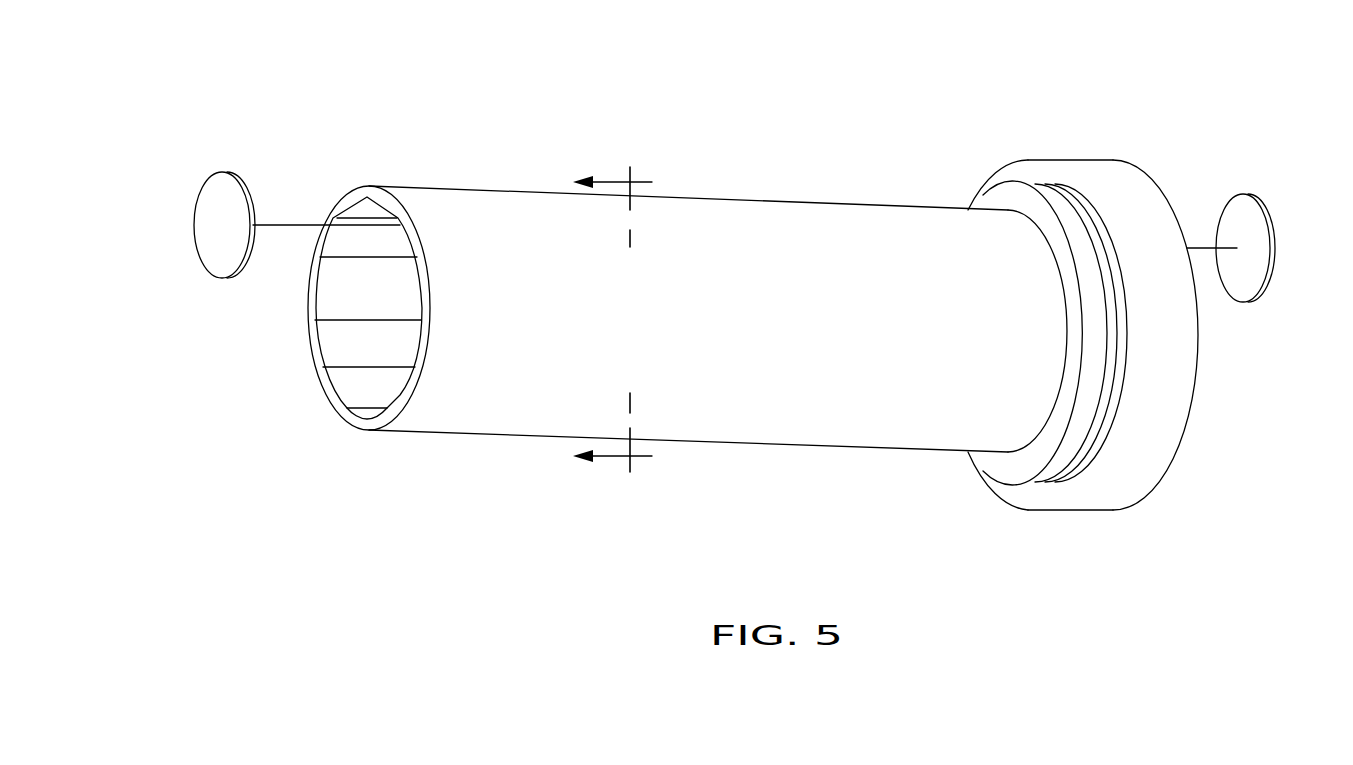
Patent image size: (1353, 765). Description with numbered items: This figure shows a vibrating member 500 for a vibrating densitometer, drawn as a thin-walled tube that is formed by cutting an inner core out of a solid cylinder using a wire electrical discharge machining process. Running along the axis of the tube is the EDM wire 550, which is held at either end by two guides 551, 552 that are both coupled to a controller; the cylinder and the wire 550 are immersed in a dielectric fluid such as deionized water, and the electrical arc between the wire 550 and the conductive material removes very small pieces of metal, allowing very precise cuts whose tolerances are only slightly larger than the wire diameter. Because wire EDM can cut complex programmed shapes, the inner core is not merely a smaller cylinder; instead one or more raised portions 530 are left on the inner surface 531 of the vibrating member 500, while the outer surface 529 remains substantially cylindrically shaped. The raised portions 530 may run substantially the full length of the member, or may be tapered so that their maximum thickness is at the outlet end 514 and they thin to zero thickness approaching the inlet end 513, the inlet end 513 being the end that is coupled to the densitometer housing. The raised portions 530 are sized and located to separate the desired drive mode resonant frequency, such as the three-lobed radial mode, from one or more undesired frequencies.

The vibrating member 500 is at (820, 108).
The inlet end 513 is at (1154, 133).
The outlet end 514 is at (358, 456).
The outer surface 529 is at (527, 217).
The raised portion 530 is at (323, 298).
The inner surface 531 is at (388, 358).
The wire 550 is at (274, 225).
The guide 551 is at (203, 207).
The guide 552 is at (1252, 213).